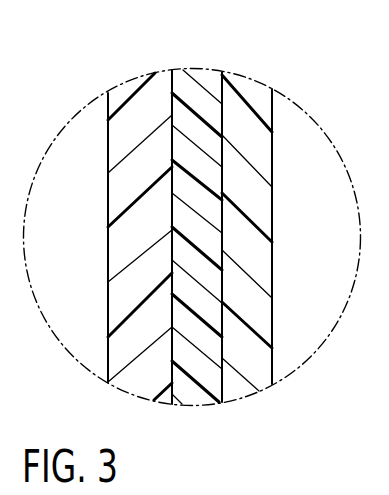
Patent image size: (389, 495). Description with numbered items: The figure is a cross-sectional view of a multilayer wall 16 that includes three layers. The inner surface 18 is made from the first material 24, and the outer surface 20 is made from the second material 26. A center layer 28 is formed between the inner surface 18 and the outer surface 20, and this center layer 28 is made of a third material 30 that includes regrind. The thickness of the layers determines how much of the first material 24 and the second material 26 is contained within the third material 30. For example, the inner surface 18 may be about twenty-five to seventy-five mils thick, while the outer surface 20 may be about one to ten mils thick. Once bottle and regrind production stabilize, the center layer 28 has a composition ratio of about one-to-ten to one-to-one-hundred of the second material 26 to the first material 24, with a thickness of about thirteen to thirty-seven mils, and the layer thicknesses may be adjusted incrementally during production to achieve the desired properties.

The multilayer wall 16 is at (192, 233).
The inner surface 18 is at (108, 119).
The outer surface 20 is at (273, 213).
The first material 24 is at (128, 298).
The second material 26 is at (253, 310).
The center layer 28 is at (220, 53).
The third material 30 is at (203, 100).